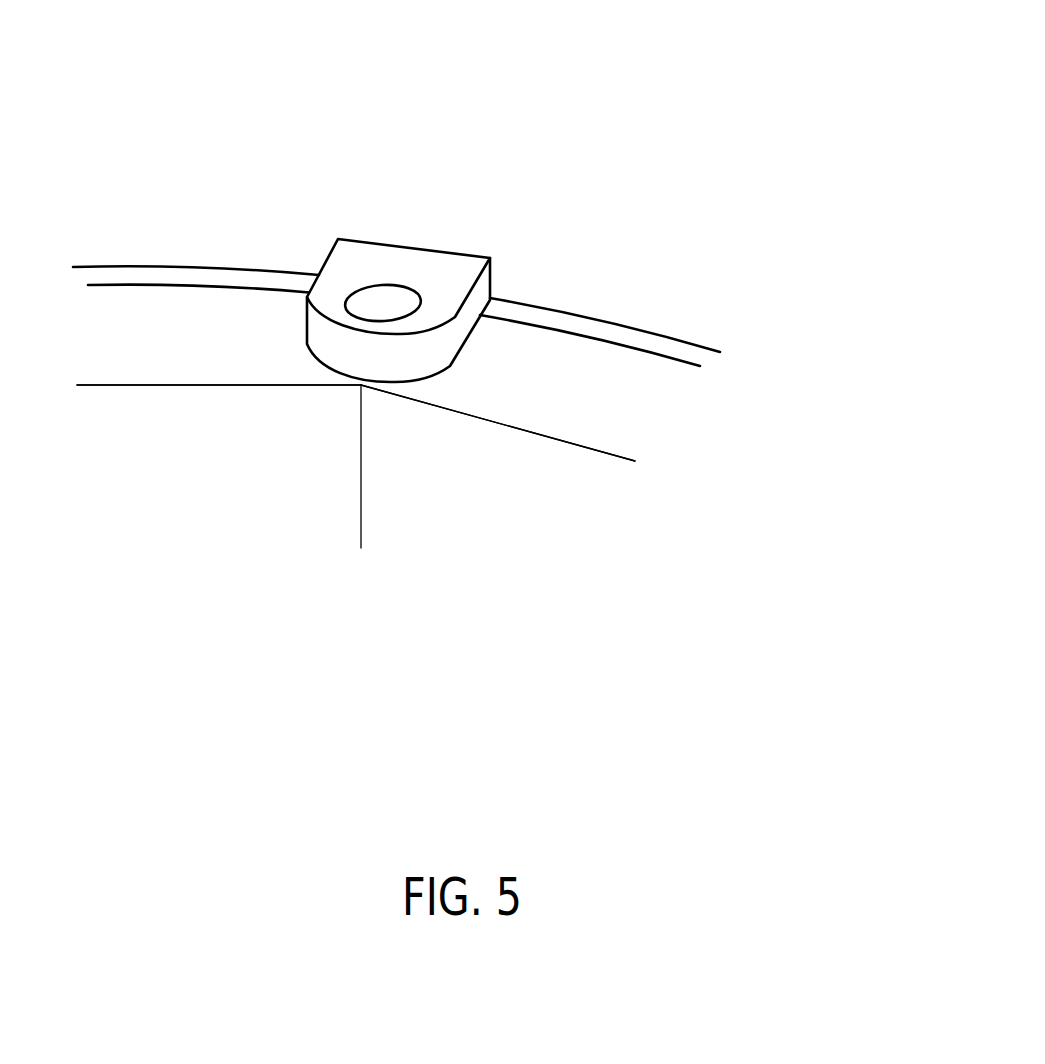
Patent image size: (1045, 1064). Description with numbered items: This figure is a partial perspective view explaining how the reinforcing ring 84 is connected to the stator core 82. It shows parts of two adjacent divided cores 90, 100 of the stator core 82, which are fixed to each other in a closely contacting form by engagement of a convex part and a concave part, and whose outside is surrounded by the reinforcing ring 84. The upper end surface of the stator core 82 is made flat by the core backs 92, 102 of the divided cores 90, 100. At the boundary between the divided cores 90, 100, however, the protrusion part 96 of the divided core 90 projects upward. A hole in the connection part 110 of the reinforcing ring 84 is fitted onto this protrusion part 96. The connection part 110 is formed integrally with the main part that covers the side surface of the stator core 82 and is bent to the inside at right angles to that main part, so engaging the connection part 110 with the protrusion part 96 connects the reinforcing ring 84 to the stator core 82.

The stator core 82 is at (297, 548).
The reinforcing ring 84 is at (575, 313).
The divided core 90 is at (645, 382).
The core back 92 is at (605, 407).
The protrusion part 96 is at (388, 300).
The divided core 100 is at (147, 317).
The core back 102 is at (120, 354).
The connection part 110 is at (367, 242).